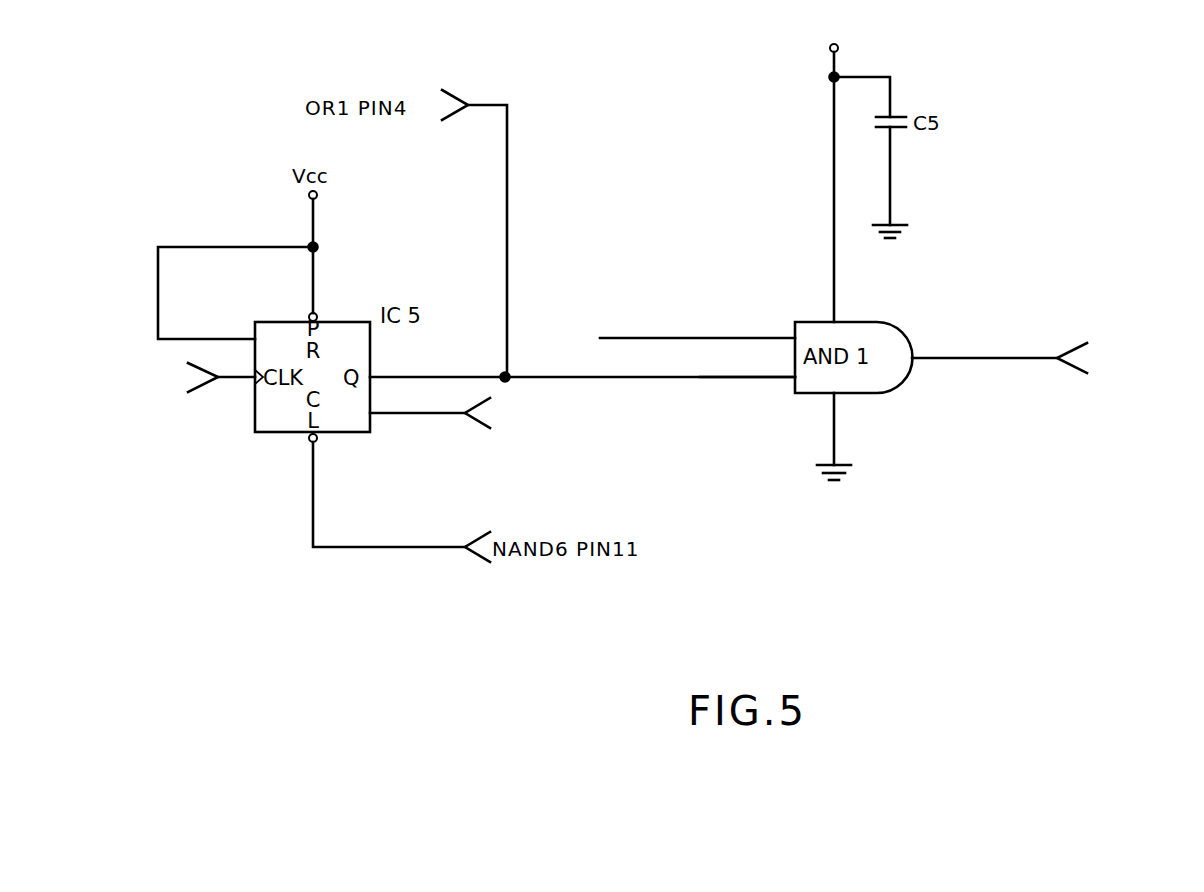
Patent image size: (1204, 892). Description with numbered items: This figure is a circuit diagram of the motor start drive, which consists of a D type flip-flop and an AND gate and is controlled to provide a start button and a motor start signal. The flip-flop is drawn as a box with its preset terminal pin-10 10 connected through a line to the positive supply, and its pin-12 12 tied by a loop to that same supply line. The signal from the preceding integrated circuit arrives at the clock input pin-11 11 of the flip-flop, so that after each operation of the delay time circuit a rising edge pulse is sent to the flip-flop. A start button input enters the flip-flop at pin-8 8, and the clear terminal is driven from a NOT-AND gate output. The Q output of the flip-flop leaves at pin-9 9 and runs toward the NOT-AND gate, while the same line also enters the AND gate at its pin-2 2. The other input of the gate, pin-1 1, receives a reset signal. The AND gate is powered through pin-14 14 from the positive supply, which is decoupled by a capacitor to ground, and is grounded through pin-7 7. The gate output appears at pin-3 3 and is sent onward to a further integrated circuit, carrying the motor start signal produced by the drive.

The pin- 1 is at (697, 326).
The pin- 2 is at (747, 365).
The pin- 3 is at (1045, 353).
The pin- 7 is at (835, 436).
The pin- 8 is at (513, 408).
The pin- 9 is at (582, 367).
The pin- 10 is at (326, 307).
The pin- 11 is at (163, 374).
The pin- 12 is at (235, 293).
The pin- 14 is at (841, 170).